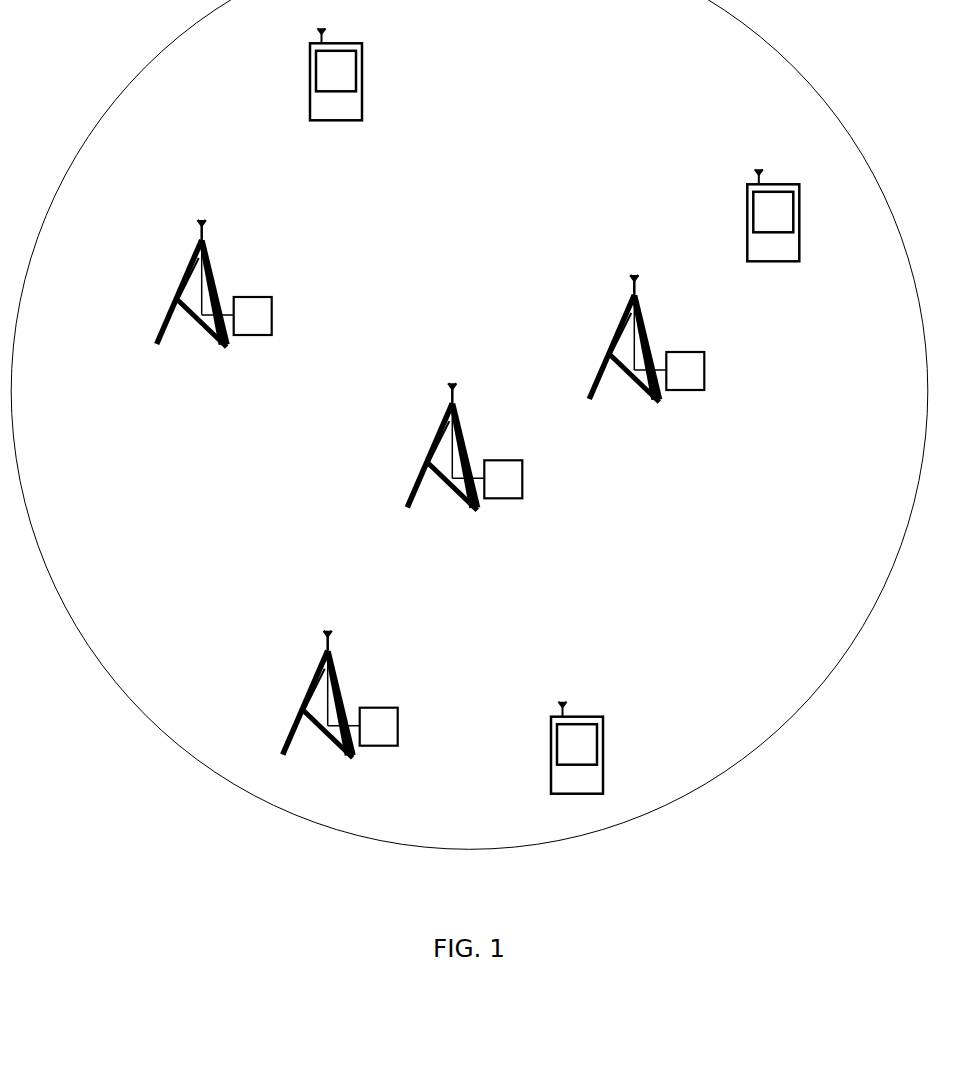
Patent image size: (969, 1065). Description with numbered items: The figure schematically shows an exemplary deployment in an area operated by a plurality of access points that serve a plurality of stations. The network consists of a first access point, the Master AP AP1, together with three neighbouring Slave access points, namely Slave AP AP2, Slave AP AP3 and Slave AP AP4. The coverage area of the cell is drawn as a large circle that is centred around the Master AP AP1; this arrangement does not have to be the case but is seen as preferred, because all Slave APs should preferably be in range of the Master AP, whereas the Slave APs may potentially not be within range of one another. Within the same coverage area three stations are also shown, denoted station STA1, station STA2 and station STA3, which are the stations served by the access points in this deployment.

The Master AP AP1 is at (420, 463).
The Slave AP AP2 is at (618, 353).
The Slave AP AP3 is at (190, 298).
The Slave AP AP4 is at (313, 708).
The station STA1 is at (763, 230).
The station STA2 is at (322, 91).
The station STA3 is at (566, 763).